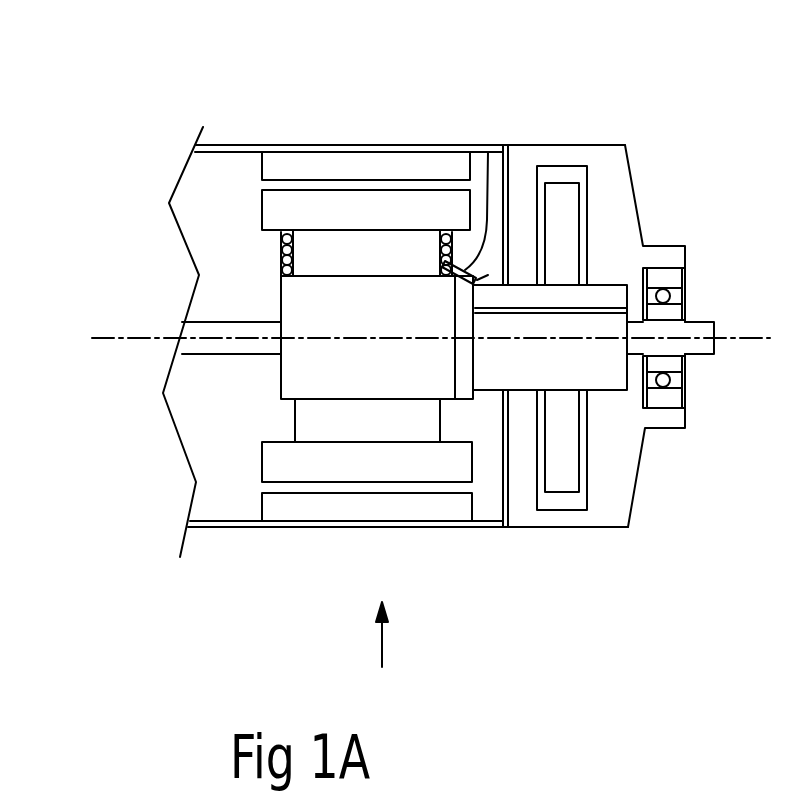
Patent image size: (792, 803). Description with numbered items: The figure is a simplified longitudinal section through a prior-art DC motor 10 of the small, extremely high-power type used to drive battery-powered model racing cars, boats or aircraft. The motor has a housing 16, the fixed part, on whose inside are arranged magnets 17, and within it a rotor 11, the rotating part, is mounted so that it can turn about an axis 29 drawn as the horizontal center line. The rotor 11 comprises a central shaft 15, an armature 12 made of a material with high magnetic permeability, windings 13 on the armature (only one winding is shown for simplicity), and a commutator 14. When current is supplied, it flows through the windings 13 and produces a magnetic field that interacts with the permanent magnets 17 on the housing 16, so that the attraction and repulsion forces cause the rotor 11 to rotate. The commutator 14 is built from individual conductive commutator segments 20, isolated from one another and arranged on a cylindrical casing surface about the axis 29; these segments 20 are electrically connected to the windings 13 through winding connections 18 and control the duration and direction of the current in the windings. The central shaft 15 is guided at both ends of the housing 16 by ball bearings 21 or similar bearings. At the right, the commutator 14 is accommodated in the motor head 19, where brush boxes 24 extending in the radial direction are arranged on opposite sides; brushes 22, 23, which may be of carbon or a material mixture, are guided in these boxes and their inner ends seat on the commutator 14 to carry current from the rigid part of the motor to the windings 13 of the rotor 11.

The DC motor 10 is at (380, 666).
The rotor 11 is at (297, 372).
The armature 12 is at (410, 467).
The windings 13 is at (278, 253).
The commutator 14 is at (615, 390).
The central shaft 15 is at (700, 352).
The housing 16 is at (341, 144).
The magnets 17 is at (297, 510).
The winding connections 18 is at (487, 147).
The motor head 19 is at (578, 145).
The commutator segments 20 is at (602, 373).
The ball bearings 21 is at (665, 298).
The brush 22 is at (563, 200).
The brush 23 is at (570, 478).
The brush boxes 24 is at (583, 231).
The axis 29 is at (152, 337).